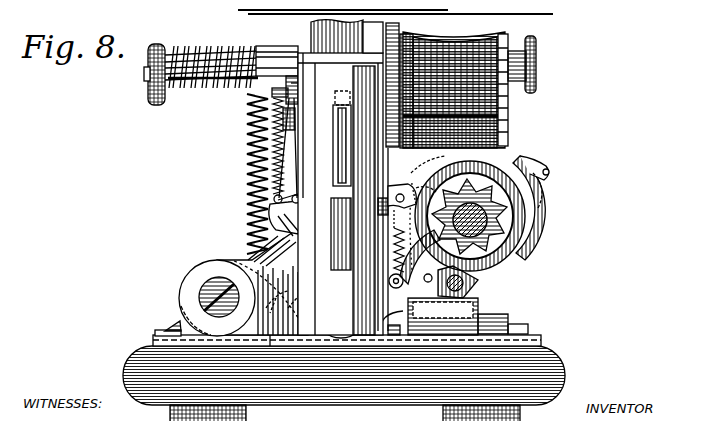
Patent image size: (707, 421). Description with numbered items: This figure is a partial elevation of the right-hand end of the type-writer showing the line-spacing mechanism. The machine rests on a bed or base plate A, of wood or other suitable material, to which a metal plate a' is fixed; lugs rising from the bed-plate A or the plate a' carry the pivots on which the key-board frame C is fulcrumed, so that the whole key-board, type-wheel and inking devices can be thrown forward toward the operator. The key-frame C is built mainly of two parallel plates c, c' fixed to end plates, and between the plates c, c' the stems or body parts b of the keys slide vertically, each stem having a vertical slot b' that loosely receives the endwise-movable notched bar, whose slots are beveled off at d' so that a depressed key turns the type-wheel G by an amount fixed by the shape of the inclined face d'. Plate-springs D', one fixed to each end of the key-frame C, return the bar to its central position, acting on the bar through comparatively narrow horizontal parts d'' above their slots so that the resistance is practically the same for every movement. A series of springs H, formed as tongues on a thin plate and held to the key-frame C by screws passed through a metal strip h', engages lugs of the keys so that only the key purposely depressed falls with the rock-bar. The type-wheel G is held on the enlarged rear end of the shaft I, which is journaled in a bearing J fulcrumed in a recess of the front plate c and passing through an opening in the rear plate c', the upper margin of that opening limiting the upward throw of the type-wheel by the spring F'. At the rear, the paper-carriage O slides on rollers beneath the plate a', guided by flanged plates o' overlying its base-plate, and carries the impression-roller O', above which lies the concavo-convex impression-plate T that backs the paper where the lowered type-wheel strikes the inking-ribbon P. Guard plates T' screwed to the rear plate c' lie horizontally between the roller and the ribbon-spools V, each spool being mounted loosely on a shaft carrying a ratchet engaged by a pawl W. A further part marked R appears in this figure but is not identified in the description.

The bed or base plate A is at (345, 383).
The metal plate a' is at (360, 344).
The beveled faces d' is at (263, 355).
The flanged guide plates o' is at (467, 321).
The key-board frame C is at (243, 279).
The front plate of the key-frame c is at (282, 307).
The rear plate of the key-frame c' is at (285, 308).
The spring F' is at (236, 174).
The springs H is at (287, 162).
The plate-springs D' is at (301, 191).
The shaft I is at (190, 76).
The type-wheel G is at (220, 42).
The bearing J is at (270, 38).
The metal strip h' is at (300, 78).
The narrow horizontal parts d'' is at (343, 194).
The key stems or body parts b is at (347, 103).
The vertical slot b' is at (348, 234).
The pawl W is at (388, 16).
The inking-ribbon P is at (518, 138).
The ribbon-spools V is at (496, 26).
The paper-carriage O is at (487, 216).
The guard plates T' is at (484, 205).
The impression-plate T is at (531, 208).
The impression-roller O' is at (558, 190).
The pawl R is at (433, 237).